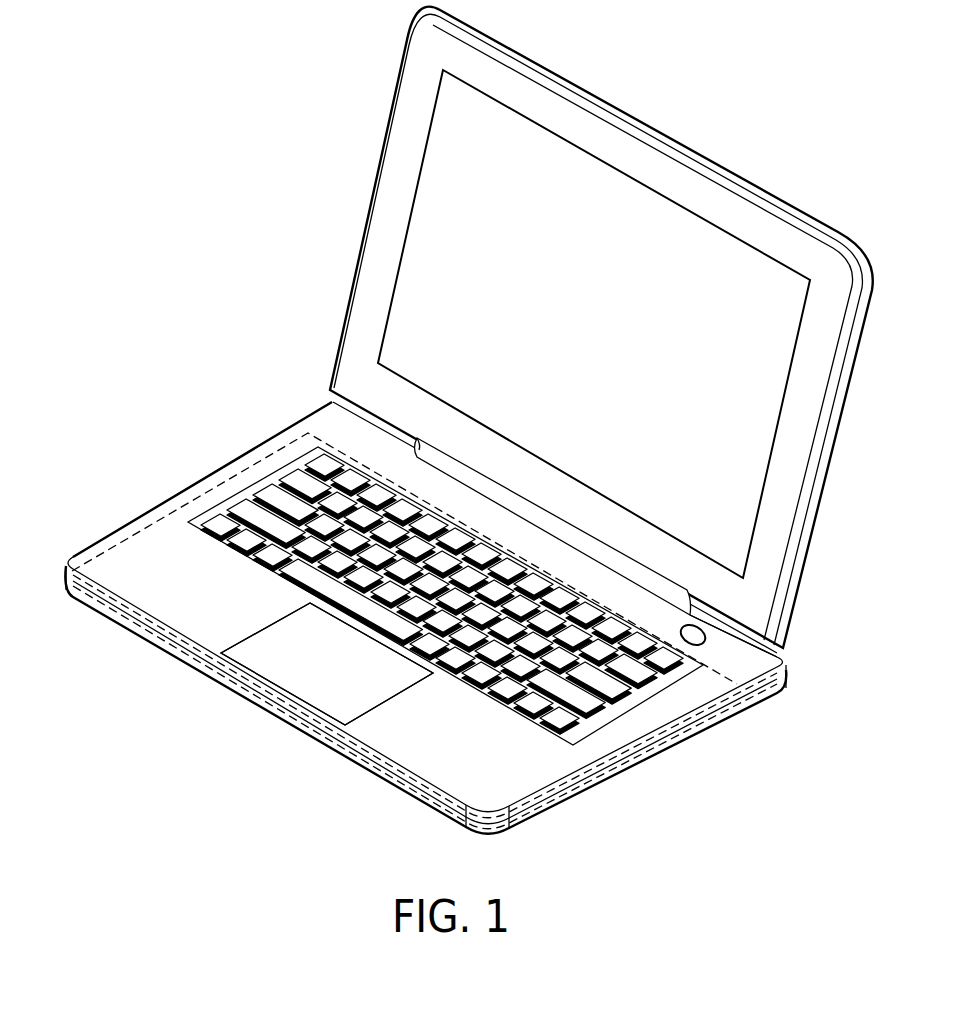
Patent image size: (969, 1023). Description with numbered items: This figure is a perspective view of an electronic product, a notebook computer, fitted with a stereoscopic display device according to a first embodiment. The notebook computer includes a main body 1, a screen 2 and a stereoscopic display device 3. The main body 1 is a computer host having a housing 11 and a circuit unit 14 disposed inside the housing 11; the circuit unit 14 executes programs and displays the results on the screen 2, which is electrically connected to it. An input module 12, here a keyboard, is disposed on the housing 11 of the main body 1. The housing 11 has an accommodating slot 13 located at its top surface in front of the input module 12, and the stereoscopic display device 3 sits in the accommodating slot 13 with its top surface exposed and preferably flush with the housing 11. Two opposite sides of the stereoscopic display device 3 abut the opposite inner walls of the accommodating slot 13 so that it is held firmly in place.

The main body 1 is at (178, 495).
The screen 2 is at (357, 263).
The stereoscopic display device 3 is at (268, 627).
The housing 11 is at (137, 560).
The input module 12 is at (270, 493).
The accommodating slot 13 is at (383, 703).
The circuit unit 14 is at (173, 652).